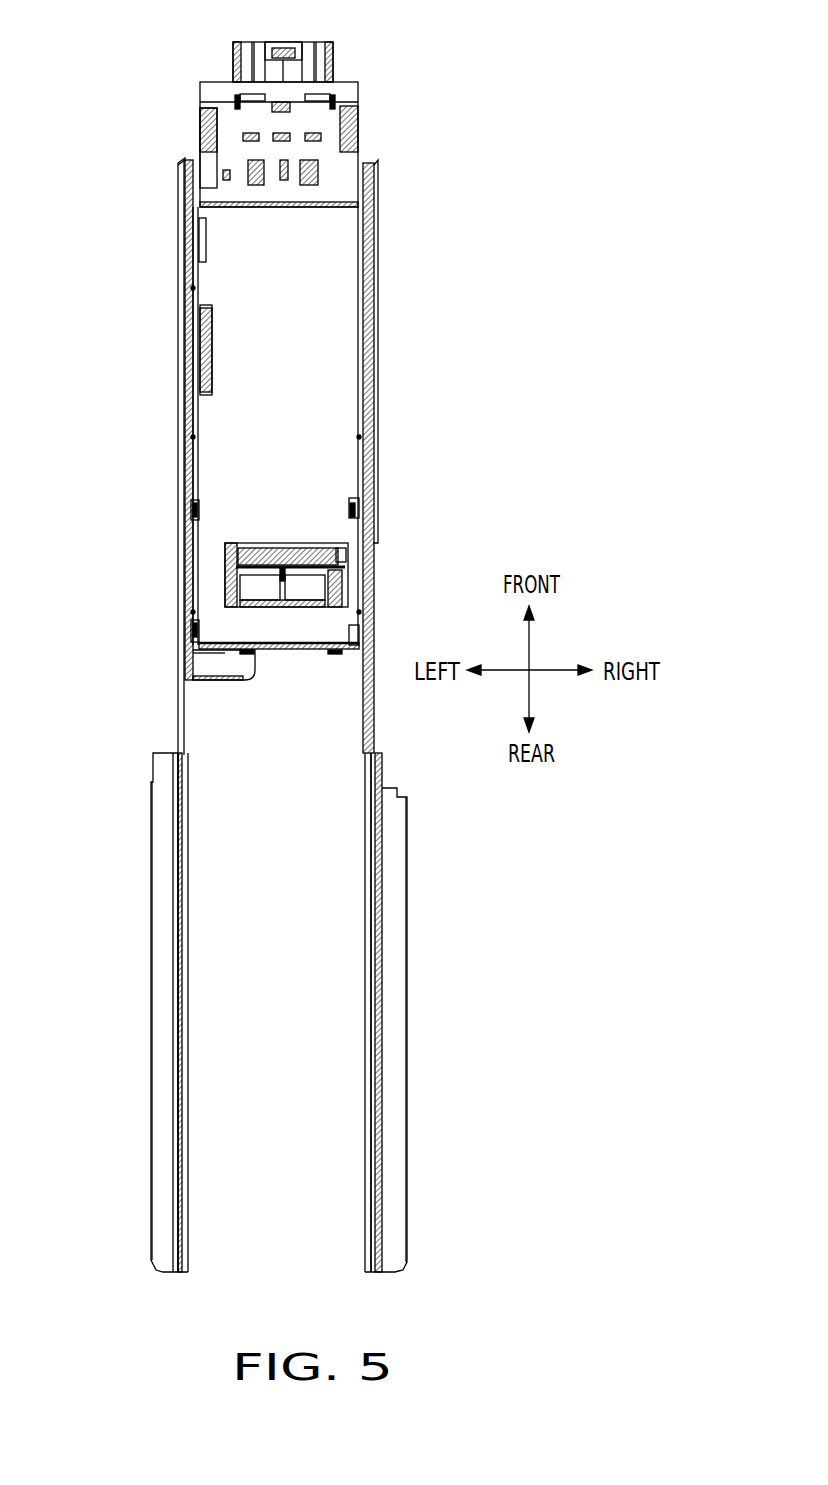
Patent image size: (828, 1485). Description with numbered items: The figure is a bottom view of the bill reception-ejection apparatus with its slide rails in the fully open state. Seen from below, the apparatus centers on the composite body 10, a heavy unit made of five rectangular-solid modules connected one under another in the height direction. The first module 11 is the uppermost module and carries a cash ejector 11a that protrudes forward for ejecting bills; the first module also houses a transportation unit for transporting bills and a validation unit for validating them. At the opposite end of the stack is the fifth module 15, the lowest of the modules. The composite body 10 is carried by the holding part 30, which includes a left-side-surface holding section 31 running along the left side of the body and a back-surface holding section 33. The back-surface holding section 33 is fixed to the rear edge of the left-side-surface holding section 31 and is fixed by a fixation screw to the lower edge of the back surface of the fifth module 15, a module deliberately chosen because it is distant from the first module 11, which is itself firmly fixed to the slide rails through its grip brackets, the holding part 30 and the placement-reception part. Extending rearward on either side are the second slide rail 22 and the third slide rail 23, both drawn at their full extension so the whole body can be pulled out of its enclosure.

The composite body 10 is at (360, 133).
The first module 11 is at (208, 92).
The cash ejector 11a is at (235, 63).
The fifth module 15 is at (208, 280).
The holding part 30 is at (188, 546).
The left-side-surface holding section 31 is at (190, 583).
The back-surface holding section 33 is at (198, 664).
The third slide rail 23 is at (150, 812).
The second slide rail 22 is at (407, 886).